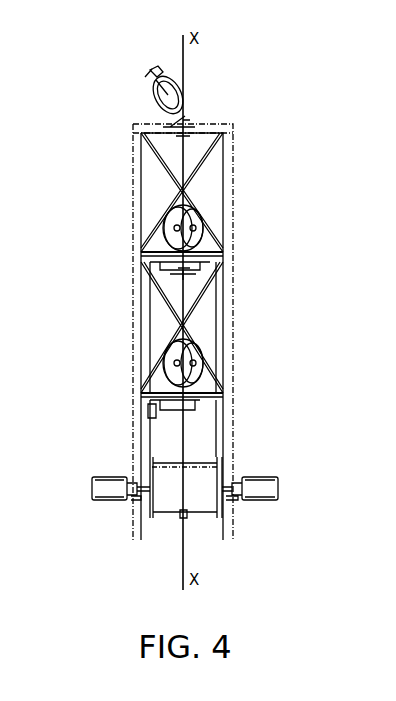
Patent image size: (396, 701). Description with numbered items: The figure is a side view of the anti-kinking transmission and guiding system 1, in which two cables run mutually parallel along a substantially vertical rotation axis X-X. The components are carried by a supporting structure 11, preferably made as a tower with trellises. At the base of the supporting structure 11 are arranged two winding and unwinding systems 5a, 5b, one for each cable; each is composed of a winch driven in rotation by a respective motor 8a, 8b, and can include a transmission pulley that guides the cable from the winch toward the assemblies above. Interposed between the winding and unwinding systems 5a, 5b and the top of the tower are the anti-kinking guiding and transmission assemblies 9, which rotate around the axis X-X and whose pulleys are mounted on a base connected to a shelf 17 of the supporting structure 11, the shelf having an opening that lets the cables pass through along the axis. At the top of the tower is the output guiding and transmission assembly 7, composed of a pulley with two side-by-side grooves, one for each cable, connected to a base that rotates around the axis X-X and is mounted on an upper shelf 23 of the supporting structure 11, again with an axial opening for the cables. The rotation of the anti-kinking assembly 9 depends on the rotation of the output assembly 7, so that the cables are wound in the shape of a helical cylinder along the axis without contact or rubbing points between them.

The anti-kinking transmission and guiding system 1 is at (280, 163).
The winding and unwinding system 5a is at (302, 470).
The winding and unwinding system 5b is at (78, 462).
The output guiding and transmission assembly 7 is at (122, 65).
The motor 8a is at (263, 480).
The motor 8b is at (105, 478).
The anti-kinking guiding and transmission assembly 9 is at (145, 213).
The supporting structure 11 is at (233, 292).
The shelf 17 is at (165, 252).
The upper shelf 23 is at (155, 127).